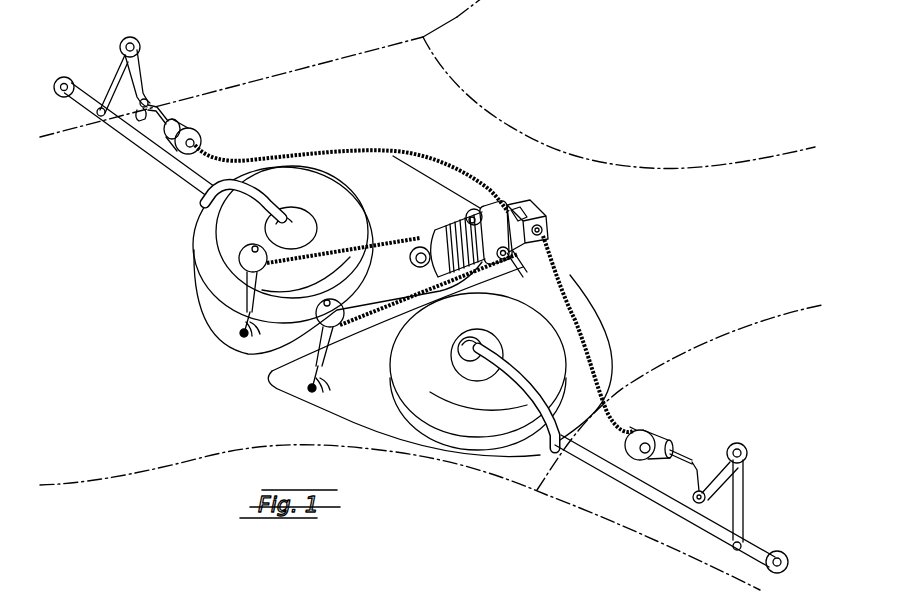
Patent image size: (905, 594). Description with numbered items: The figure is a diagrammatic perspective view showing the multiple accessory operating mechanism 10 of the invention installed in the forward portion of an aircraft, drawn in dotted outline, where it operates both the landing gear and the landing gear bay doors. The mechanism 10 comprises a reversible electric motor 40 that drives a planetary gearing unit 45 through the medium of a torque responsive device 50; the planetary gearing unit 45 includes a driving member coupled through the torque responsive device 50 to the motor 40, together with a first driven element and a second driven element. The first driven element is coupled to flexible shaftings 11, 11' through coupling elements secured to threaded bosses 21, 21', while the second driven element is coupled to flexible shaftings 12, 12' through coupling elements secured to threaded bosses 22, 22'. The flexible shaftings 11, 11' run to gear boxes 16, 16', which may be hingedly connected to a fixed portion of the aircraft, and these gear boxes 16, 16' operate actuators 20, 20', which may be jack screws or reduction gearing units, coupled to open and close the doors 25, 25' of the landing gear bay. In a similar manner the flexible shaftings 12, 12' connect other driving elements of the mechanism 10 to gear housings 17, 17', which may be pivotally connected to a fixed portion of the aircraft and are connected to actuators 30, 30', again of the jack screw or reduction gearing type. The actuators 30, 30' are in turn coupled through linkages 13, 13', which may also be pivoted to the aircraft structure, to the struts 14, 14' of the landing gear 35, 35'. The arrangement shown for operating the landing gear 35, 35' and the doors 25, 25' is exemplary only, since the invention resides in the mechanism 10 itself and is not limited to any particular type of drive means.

The multiple accessory operating mechanism 10 is at (448, 218).
The flexible shafting 11 is at (343, 230).
The flexible shafting 11' is at (429, 289).
The flexible shafting 12 is at (351, 170).
The flexible shafting 12' is at (588, 334).
The linkage 13 is at (144, 79).
The linkage 13' is at (737, 496).
The strut 14 is at (135, 137).
The strut 14' is at (671, 504).
The gear box 16 is at (243, 209).
The gear box 16' is at (449, 388).
The gear housing 17 is at (205, 136).
The gear housing 17' is at (652, 425).
The actuator 20 is at (217, 290).
The actuator 20' is at (336, 345).
The threaded boss 21 is at (468, 201).
The threaded boss 21' is at (524, 274).
The threaded boss 22 is at (527, 210).
The threaded boss 22' is at (564, 238).
The door 25 is at (325, 302).
The door 25' is at (440, 362).
The actuator 30 is at (184, 110).
The actuator 30' is at (693, 451).
The landing gear 35 is at (255, 244).
The landing gear 35' is at (478, 407).
The reversible electric motor 40 is at (410, 253).
The planetary gearing unit 45 is at (525, 213).
The torque responsive device 50 is at (503, 203).